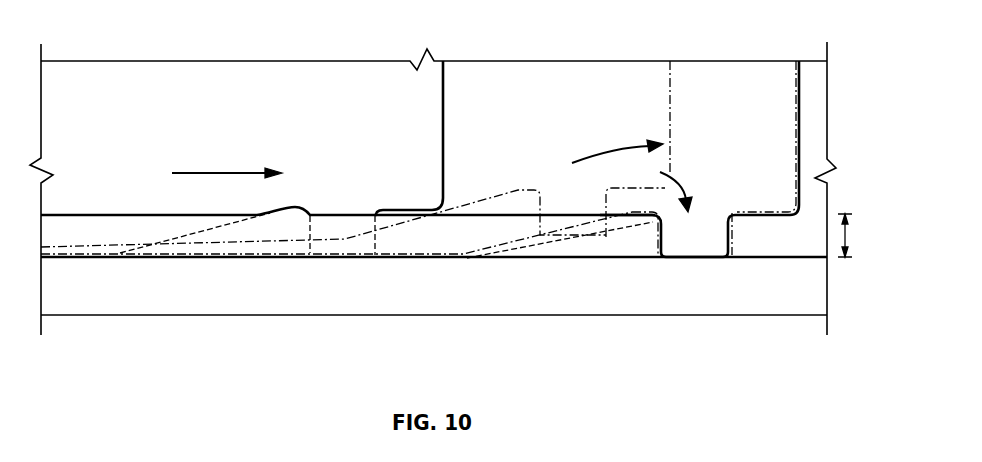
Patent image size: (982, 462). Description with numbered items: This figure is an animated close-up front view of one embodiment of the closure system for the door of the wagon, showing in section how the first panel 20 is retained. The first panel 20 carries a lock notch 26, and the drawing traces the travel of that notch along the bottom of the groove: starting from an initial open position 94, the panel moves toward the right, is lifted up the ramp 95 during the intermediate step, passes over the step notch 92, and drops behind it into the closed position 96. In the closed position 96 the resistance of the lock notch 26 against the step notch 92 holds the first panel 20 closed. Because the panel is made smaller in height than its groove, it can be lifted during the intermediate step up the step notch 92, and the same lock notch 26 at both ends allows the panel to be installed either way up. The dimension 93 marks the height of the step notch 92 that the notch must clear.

The first panel 20 is at (778, 187).
The lock notch 26 is at (573, 207).
The step notch 92 is at (565, 245).
The recess depth 93 is at (859, 235).
The initial open position 94 is at (443, 97).
The ramp 95 is at (670, 97).
The closed position 96 is at (798, 97).